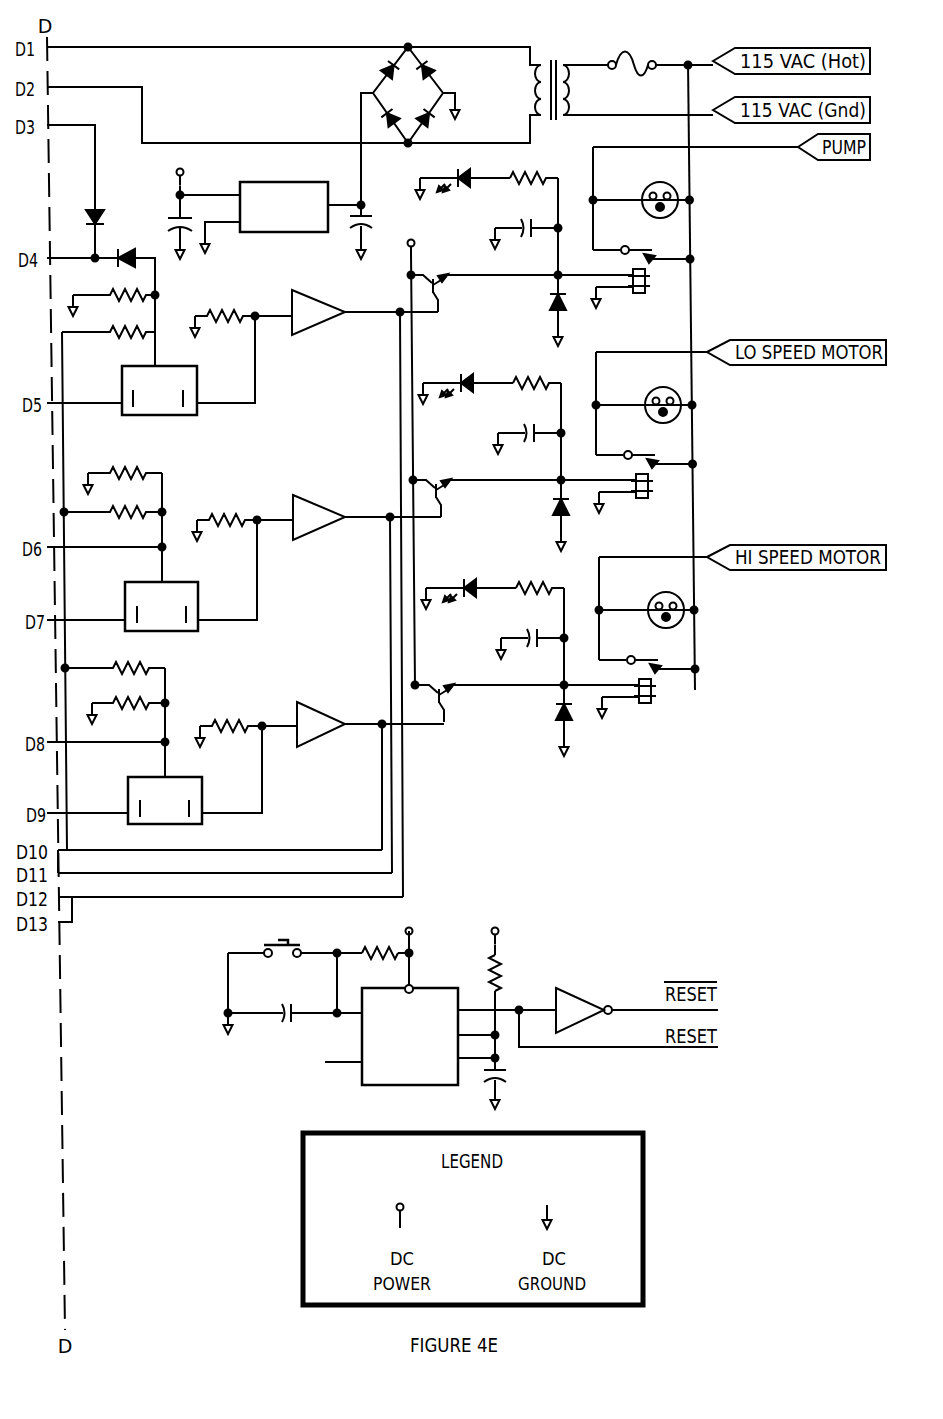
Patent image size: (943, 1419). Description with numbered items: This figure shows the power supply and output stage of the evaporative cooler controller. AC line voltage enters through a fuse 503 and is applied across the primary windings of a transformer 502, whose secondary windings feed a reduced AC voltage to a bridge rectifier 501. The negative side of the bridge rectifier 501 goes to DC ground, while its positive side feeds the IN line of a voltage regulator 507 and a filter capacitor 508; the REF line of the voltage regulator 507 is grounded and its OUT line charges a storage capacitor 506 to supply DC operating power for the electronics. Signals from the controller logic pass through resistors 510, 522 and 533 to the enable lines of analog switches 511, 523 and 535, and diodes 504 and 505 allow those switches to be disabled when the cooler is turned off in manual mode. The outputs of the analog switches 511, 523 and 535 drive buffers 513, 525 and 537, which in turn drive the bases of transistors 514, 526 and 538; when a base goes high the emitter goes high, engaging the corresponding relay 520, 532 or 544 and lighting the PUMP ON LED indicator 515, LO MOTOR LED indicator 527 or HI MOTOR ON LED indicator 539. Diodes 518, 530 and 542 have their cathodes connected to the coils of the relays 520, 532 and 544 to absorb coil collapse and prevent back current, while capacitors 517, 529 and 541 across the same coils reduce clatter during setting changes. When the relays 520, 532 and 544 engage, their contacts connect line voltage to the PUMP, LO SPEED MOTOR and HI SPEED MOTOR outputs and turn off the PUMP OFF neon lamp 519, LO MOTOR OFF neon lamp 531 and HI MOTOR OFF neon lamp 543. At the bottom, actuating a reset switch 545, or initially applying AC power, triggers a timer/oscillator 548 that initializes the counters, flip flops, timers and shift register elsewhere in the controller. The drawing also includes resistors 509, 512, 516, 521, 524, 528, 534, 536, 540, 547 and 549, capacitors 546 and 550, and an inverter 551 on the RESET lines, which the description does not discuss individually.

The bridge rectifier 501 is at (421, 95).
The transformer 502 is at (554, 79).
The fuse 503 is at (632, 52).
The diode 504 is at (82, 228).
The diode 505 is at (131, 245).
The storage capacitor 506 is at (168, 214).
The voltage regulator 507 is at (284, 220).
The filter capacitor 508 is at (382, 232).
The resistor 509 is at (112, 307).
The resistor 510 is at (108, 343).
The analog switch 511 is at (159, 403).
The resistor 512 is at (242, 329).
The buffer 513 is at (320, 322).
The transistor 514 is at (434, 281).
The PUMP ON LED indicator 515 is at (463, 172).
The resistor 516 is at (534, 166).
The capacitor 517 is at (525, 241).
The diode 518 is at (537, 318).
The PUMP OFF neon lamp 519 is at (660, 187).
The relay 520 is at (641, 270).
The resistor 521 is at (123, 485).
The resistor 522 is at (112, 523).
The analog switch 523 is at (161, 619).
The resistor 524 is at (243, 532).
The buffer 525 is at (326, 526).
The transistor 526 is at (437, 486).
The LO MOTOR LED indicator 527 is at (466, 377).
The resistor 528 is at (537, 371).
The capacitor 529 is at (528, 446).
The diode 530 is at (540, 523).
The LO MOTOR OFF neon lamp 531 is at (663, 392).
The relay 532 is at (644, 475).
The resistor 533 is at (115, 679).
The resistor 534 is at (127, 714).
The analog switch 535 is at (165, 813).
The resistor 536 is at (247, 738).
The buffer 537 is at (329, 732).
The transistor 538 is at (440, 691).
The HI MOTOR ON LED indicator 539 is at (469, 582).
The resistor 540 is at (540, 576).
The capacitor 541 is at (531, 651).
The diode 542 is at (543, 728).
The HI MOTOR OFF neon lamp 543 is at (666, 597).
The relay 544 is at (647, 680).
The reset switch 545 is at (286, 963).
The capacitor 546 is at (283, 1028).
The resistor 547 is at (376, 966).
The timer/oscillator 548 is at (410, 1049).
The resistor 549 is at (516, 973).
The capacitor 550 is at (517, 1089).
The inverter 551 is at (584, 999).